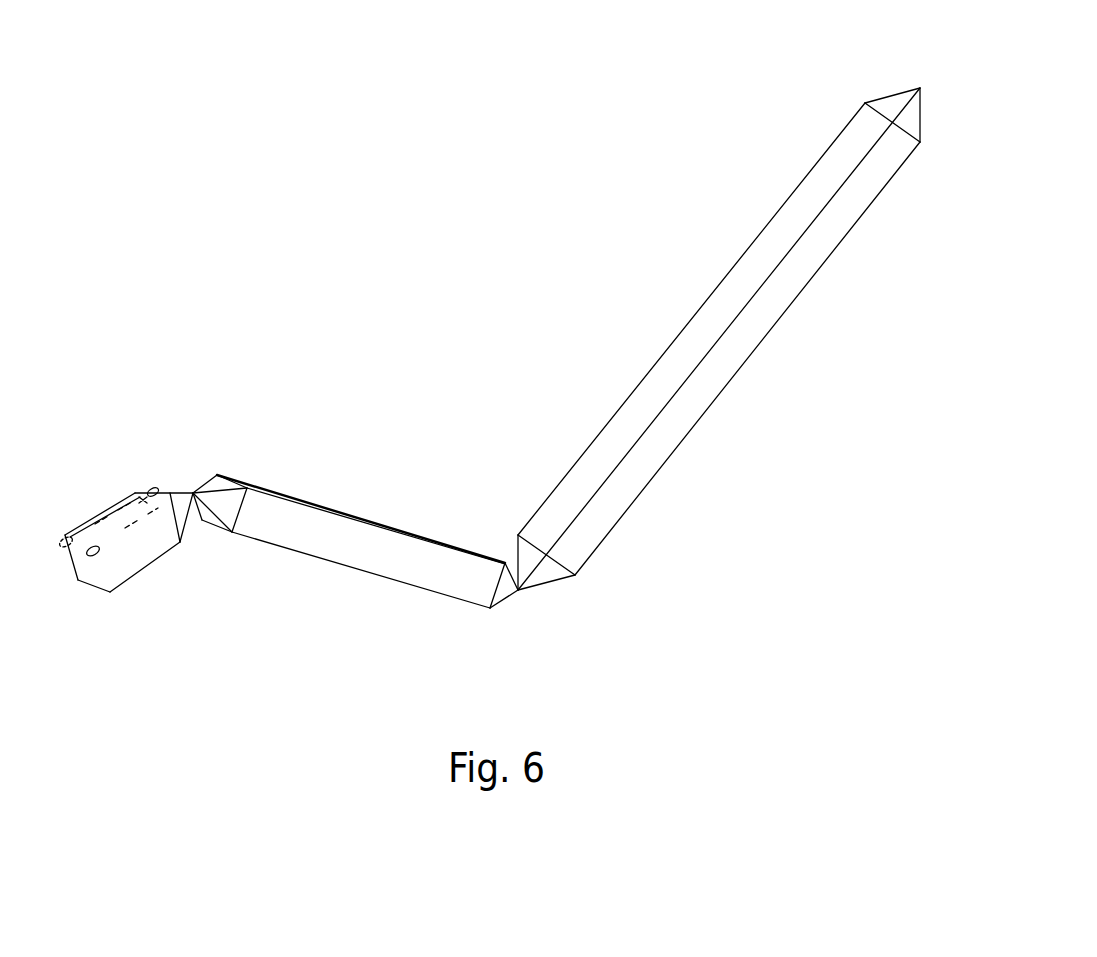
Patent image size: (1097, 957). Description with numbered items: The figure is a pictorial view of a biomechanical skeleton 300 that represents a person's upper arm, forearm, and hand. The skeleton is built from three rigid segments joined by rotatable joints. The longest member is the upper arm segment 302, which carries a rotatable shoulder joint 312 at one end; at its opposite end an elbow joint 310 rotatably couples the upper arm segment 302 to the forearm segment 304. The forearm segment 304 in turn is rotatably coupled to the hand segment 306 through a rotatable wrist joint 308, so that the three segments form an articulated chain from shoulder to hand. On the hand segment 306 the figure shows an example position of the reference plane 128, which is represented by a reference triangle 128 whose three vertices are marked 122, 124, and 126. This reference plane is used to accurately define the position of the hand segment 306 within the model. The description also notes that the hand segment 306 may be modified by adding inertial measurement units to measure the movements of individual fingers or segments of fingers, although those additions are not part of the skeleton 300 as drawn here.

The biomechanical skeleton 300 is at (345, 118).
The upper arm segment 302 is at (625, 400).
The forearm segment 304 is at (357, 570).
The hand segment 306 is at (109, 592).
The wrist joint 308 is at (193, 493).
The elbow joint 310 is at (518, 590).
The shoulder joint 312 is at (920, 88).
The vertex of reference triangle 122 is at (110, 592).
The vertex of reference triangle 124 is at (68, 538).
The vertex of reference triangle 126 is at (152, 490).
The reference plane 128 is at (128, 520).